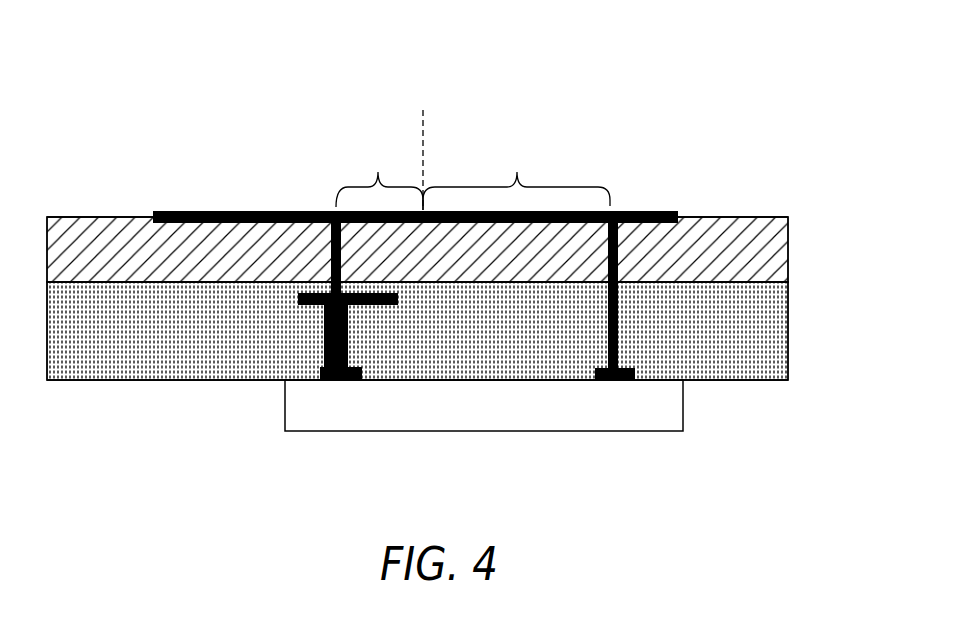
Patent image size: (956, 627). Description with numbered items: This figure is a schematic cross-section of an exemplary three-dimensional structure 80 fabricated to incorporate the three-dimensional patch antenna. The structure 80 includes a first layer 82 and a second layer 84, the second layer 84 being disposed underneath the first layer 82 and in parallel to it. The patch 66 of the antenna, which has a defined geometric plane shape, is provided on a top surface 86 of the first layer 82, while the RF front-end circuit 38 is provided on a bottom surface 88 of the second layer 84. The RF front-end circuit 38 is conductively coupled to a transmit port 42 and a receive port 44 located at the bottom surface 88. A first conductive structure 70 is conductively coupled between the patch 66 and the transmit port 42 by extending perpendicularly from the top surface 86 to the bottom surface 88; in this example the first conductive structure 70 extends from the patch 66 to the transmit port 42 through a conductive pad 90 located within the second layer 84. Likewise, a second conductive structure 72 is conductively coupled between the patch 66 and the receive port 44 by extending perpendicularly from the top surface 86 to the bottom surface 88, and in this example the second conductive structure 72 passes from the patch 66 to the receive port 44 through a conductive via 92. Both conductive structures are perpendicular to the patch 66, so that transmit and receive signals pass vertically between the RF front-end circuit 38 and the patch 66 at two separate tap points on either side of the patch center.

The 3D structure 80 is at (448, 247).
The first layer 82 is at (788, 247).
The second layer 84 is at (788, 341).
The top surface 86 is at (85, 216).
The bottom surface 88 is at (86, 381).
The patch 66 is at (176, 210).
The conductive pad 90 is at (298, 298).
The first conductive structure 70 is at (348, 323).
The transmit port 42 is at (352, 367).
The conductive via 92 is at (620, 257).
The second conductive structure 72 is at (603, 308).
The receive port 44 is at (621, 368).
The RF front-end circuit 38 is at (668, 431).